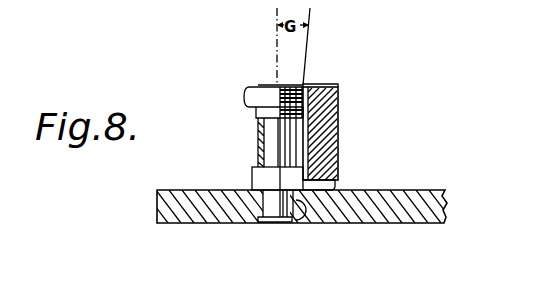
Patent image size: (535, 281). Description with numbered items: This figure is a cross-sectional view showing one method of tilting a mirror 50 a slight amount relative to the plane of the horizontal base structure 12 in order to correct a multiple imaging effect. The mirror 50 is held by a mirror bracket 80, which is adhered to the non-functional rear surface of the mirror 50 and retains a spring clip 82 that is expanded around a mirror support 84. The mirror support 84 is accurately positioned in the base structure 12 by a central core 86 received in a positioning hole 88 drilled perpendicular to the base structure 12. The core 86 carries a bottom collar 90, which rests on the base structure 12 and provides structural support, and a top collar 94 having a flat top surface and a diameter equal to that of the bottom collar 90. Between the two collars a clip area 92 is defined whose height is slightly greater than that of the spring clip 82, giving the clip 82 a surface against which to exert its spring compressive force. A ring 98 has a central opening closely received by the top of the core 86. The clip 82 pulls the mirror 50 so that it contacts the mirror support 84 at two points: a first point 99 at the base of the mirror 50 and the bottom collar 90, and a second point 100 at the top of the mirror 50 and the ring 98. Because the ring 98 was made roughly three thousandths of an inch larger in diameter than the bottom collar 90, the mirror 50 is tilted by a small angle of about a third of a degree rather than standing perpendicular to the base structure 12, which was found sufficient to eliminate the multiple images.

The horizontal base structure 12 is at (400, 198).
The mirror 50 is at (340, 118).
The mirror bracket 80 is at (320, 86).
The spring clip 82 is at (255, 131).
The mirror support 84 is at (238, 95).
The central core 86 is at (266, 85).
The positioning hole 88 is at (300, 220).
The bottom collar 90 is at (253, 180).
The clip area 92 is at (272, 145).
The top collar 94 is at (247, 107).
The ring 98 is at (250, 86).
The contact point at base of mirror 99 is at (315, 183).
The contact point at top of mirror 100 is at (293, 85).